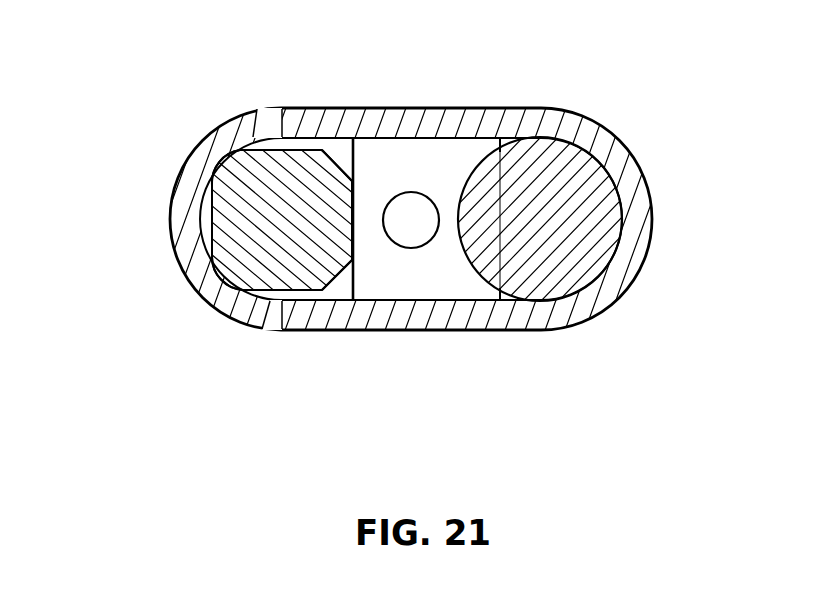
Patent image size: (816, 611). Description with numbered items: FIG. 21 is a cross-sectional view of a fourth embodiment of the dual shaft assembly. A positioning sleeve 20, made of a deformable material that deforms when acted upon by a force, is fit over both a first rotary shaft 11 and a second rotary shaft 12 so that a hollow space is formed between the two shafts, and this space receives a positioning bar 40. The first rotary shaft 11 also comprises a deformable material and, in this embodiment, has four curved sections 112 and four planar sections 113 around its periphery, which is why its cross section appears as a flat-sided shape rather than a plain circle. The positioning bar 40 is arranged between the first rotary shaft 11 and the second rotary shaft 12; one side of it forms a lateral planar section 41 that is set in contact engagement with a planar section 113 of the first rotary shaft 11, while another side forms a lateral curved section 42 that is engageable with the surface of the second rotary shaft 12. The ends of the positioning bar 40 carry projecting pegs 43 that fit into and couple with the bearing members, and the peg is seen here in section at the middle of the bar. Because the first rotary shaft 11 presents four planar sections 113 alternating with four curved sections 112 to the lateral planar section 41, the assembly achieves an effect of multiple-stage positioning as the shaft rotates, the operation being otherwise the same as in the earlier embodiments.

The positioning sleeve 20 is at (476, 120).
The first rotary shaft 11 is at (262, 212).
The second rotary shaft 12 is at (558, 212).
The curved section 112 is at (215, 178).
The planar section 113 is at (284, 152).
The positioning bar 40 is at (433, 217).
The lateral planar section 41 is at (368, 228).
The lateral curved section 42 is at (456, 236).
The projecting peg 43 is at (402, 218).